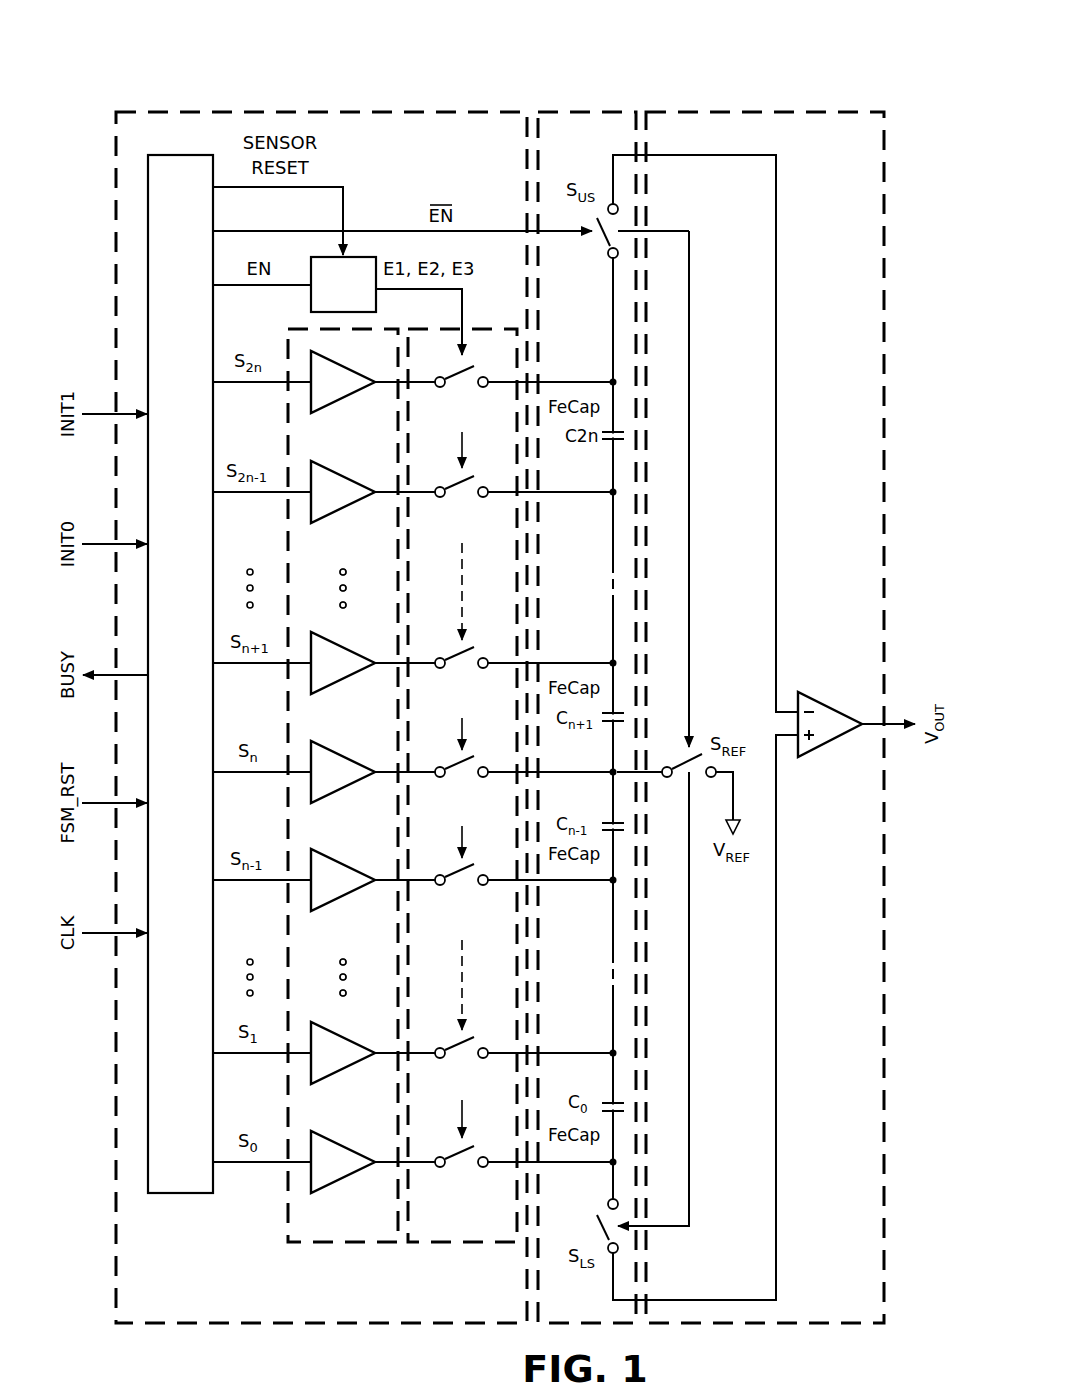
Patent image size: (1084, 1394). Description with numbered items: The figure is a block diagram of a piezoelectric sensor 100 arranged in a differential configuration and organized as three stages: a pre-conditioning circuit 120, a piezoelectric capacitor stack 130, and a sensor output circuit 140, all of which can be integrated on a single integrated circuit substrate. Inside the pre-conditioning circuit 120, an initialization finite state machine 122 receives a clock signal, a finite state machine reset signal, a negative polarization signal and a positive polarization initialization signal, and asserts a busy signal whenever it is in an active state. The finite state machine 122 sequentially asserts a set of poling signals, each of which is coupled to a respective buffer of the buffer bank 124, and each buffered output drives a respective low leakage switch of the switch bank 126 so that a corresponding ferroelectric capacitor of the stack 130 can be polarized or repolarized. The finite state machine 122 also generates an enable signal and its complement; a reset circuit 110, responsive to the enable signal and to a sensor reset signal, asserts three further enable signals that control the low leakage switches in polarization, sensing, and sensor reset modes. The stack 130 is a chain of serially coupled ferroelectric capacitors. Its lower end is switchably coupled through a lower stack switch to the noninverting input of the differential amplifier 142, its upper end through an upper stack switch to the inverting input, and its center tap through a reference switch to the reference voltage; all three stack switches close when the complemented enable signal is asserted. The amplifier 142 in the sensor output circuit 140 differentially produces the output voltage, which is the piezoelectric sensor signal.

The piezoelectric sensor 100 is at (132, 62).
The reset circuit 110 is at (343, 284).
The pre-conditioning circuit 120 is at (245, 108).
The initialization finite state machine 122 is at (180, 674).
The buffer bank 124 is at (317, 1245).
The switch bank 126 is at (437, 1245).
The piezoelectric capacitor stack 130 is at (624, 108).
The sensor output circuit 140 is at (806, 108).
The differential amplifier 142 is at (832, 744).